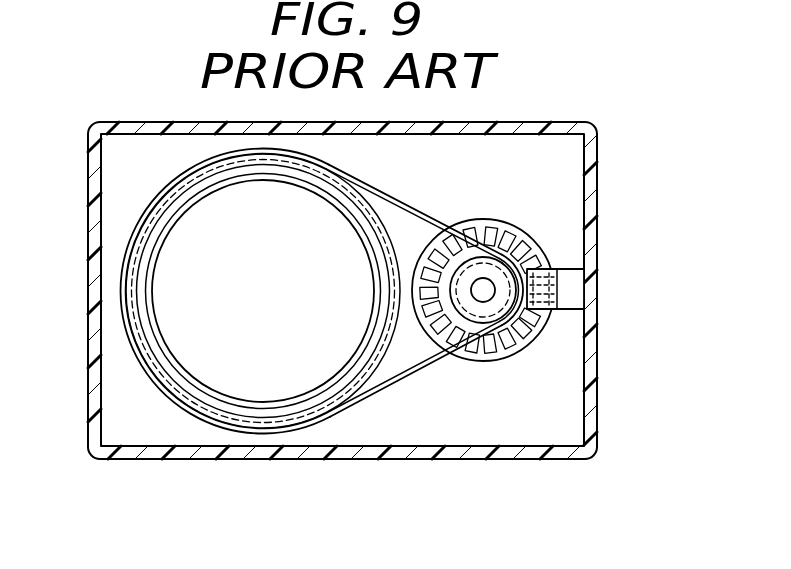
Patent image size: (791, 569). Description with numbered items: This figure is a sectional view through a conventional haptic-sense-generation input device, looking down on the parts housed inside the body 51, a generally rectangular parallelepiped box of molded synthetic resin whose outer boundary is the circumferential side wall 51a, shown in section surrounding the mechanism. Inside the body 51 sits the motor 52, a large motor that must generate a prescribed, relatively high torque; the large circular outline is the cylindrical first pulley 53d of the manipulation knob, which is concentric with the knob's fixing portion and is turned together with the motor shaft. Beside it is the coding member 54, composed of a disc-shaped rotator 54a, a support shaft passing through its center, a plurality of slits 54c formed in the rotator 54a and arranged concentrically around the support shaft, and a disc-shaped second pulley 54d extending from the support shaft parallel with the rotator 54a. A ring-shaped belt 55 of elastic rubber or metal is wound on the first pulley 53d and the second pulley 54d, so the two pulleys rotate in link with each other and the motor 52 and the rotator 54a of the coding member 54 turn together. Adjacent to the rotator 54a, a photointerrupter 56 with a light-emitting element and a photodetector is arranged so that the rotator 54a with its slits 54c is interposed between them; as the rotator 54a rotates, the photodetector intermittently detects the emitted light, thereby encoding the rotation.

The body 51 is at (606, 228).
The circumferential side wall 51a is at (598, 140).
The motor 52 is at (253, 383).
The first pulley 53d is at (285, 428).
The coding member 54 is at (486, 290).
The rotator 54a is at (532, 342).
The slits 54c is at (493, 220).
The second pulley 54d is at (473, 302).
The belt 55 is at (390, 383).
The photointerrupter 56 is at (573, 293).